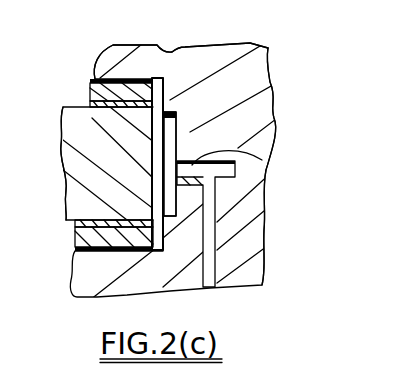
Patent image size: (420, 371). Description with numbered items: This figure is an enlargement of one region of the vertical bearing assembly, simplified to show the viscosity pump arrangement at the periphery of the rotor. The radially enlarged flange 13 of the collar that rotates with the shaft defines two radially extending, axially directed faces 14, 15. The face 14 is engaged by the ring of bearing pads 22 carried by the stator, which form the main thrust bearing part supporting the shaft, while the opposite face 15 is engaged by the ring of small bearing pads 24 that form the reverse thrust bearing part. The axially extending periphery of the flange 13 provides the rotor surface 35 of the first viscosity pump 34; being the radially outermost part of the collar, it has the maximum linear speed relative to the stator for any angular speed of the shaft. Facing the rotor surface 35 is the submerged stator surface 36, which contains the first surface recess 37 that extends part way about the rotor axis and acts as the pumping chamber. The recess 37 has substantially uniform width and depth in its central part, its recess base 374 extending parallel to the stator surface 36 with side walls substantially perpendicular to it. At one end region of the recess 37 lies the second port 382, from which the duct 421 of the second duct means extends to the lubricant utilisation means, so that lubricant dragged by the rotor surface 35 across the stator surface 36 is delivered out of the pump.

The flange 13 is at (83, 117).
The face 14 is at (100, 219).
The face 15 is at (88, 125).
The bearing pads 22 is at (98, 235).
The small bearing pads 24 is at (125, 90).
The first viscosity pump 34 is at (233, 131).
The rotor surface 35 is at (63, 140).
The stator surface 36 is at (163, 77).
The first surface recess 37 is at (177, 110).
The recess base 374 is at (266, 85).
The second port 382 is at (178, 180).
The duct 421 is at (262, 160).